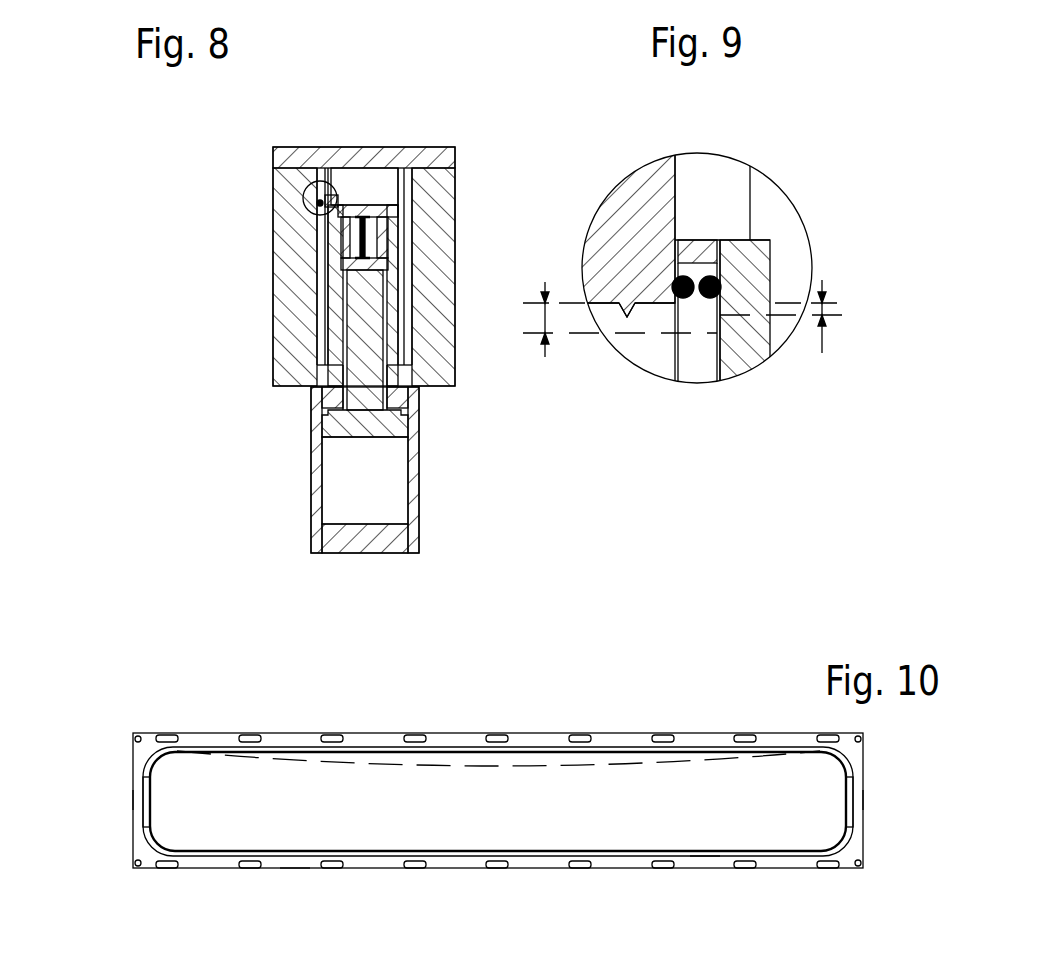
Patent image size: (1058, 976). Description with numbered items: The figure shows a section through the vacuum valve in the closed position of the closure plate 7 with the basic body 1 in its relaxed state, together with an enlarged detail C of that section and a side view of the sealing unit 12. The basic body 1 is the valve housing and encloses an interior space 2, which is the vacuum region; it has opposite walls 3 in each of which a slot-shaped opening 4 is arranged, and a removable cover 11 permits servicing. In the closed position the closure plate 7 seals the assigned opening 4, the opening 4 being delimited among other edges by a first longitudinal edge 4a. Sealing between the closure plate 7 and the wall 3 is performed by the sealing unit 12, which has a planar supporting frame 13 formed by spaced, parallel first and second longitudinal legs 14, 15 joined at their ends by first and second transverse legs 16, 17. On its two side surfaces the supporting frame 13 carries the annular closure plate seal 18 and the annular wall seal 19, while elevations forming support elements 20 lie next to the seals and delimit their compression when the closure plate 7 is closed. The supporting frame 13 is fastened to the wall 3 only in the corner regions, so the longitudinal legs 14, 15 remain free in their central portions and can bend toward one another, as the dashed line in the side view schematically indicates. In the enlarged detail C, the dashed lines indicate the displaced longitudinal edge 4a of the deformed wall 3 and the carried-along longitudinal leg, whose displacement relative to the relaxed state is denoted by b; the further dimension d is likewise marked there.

In FIG. 8, the basic body 1 is at (462, 373).
In FIG. 8, the interior space 2 is at (376, 182).
In FIG. 8, the wall 3 is at (437, 188).
In FIG. 9, the wall 3 is at (656, 193).
In FIG. 9, the opening 4 is at (647, 348).
In FIG. 9, the first longitudinal edge 4a is at (627, 317).
In FIG. 8, the closure plate 7 is at (322, 263).
In FIG. 9, the closure plate 7 is at (747, 343).
In FIG. 8, the cover 11 is at (313, 158).
In FIG. 8, the sealing unit 12 is at (407, 275).
In FIG. 9, the sealing unit 12 is at (701, 235).
In FIG. 10, the sealing unit 12 is at (293, 881).
In FIG. 10, the supporting frame 13 is at (152, 858).
In FIG. 10, the first longitudinal leg 14 is at (540, 746).
In FIG. 10, the second longitudinal leg 15 is at (698, 862).
In FIG. 10, the first transverse leg 16 is at (138, 798).
In FIG. 10, the second transverse leg 17 is at (855, 808).
In FIG. 9, the closure plate seal 18 is at (720, 283).
In FIG. 9, the wall seal 19 is at (675, 273).
In FIG. 10, the wall seal 19 is at (690, 750).
In FIG. 10, the support elements 20 is at (253, 735).
In FIG. 8, the detail C is at (322, 200).
In FIG. 9, the displacement of the longitudinal leg b is at (823, 311).
In FIG. 9, the depth d is at (620, 314).